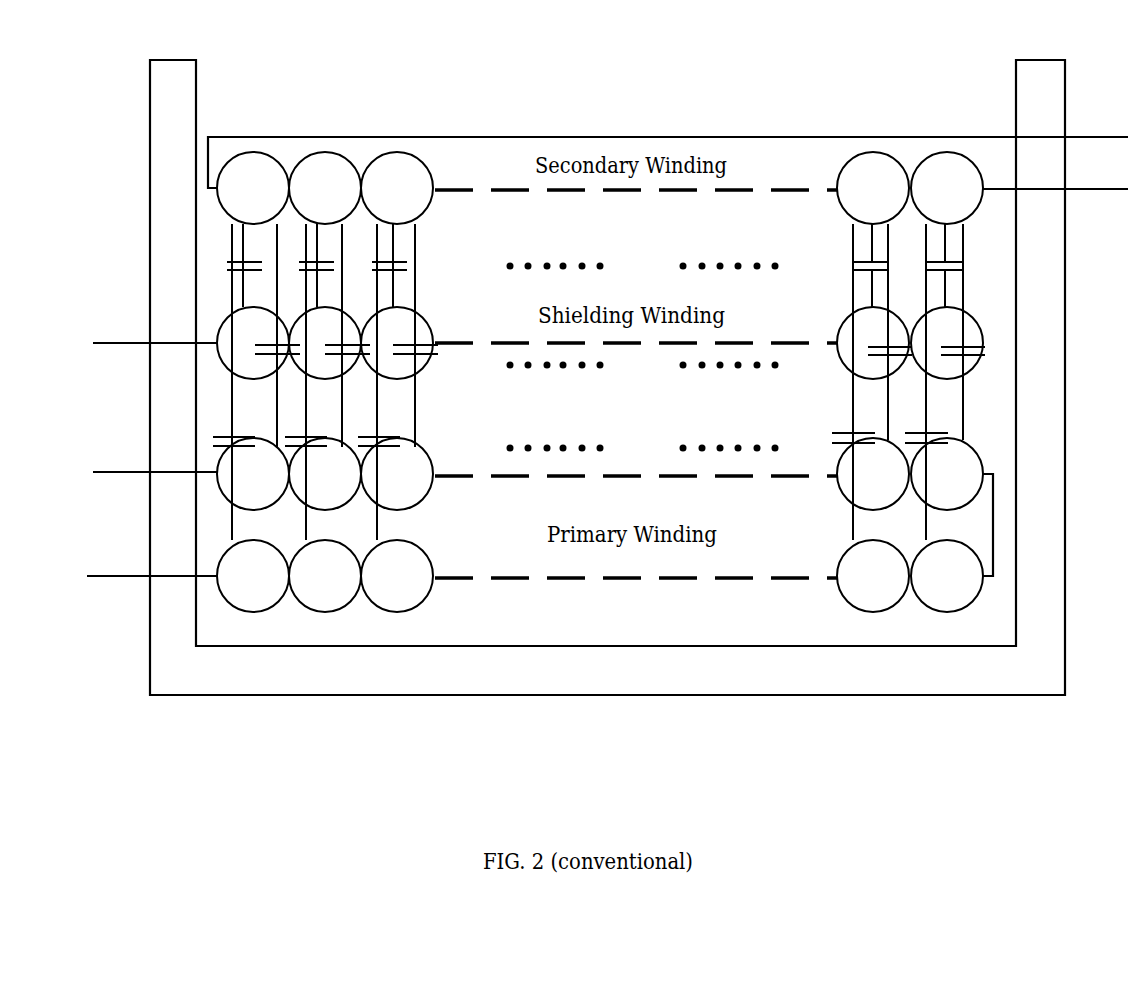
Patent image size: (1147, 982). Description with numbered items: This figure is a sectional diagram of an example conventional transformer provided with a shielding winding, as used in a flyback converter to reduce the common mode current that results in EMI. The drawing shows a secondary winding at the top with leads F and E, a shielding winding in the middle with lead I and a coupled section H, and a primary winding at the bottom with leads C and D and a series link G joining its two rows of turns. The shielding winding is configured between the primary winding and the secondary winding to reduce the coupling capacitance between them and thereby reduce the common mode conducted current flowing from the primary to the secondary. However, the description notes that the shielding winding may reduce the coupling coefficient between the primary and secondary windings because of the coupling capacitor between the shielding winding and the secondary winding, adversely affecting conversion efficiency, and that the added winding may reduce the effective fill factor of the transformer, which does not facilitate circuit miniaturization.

The secondary winding first terminal F is at (668, 147).
The secondary winding second terminal E is at (1055, 209).
The shielding winding terminal I is at (137, 344).
The shielding winding coupling section H is at (918, 382).
The primary winding first terminal C is at (135, 473).
The primary winding second terminal D is at (135, 576).
The primary winding series connection G is at (980, 525).